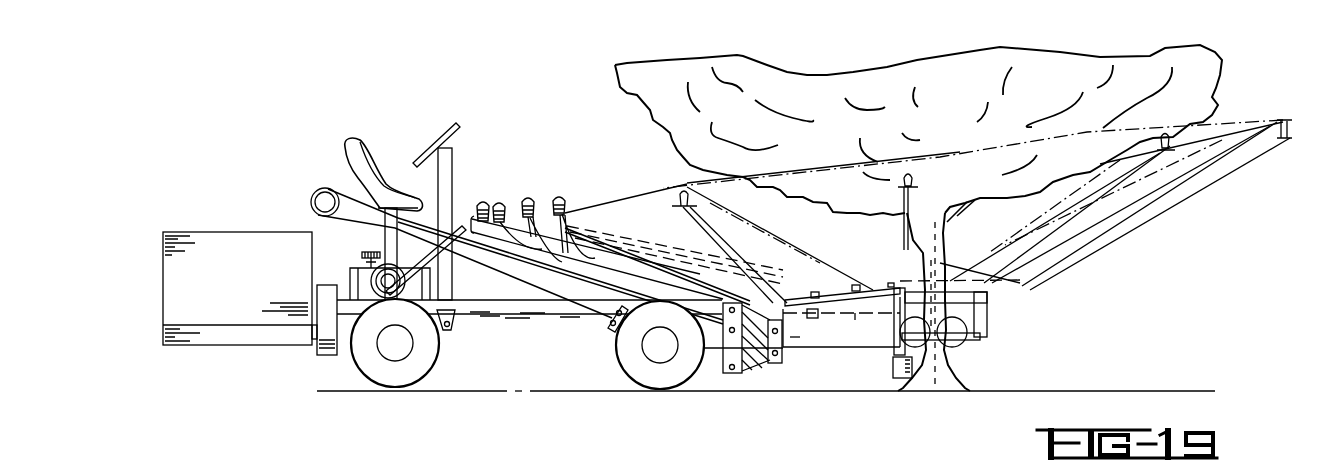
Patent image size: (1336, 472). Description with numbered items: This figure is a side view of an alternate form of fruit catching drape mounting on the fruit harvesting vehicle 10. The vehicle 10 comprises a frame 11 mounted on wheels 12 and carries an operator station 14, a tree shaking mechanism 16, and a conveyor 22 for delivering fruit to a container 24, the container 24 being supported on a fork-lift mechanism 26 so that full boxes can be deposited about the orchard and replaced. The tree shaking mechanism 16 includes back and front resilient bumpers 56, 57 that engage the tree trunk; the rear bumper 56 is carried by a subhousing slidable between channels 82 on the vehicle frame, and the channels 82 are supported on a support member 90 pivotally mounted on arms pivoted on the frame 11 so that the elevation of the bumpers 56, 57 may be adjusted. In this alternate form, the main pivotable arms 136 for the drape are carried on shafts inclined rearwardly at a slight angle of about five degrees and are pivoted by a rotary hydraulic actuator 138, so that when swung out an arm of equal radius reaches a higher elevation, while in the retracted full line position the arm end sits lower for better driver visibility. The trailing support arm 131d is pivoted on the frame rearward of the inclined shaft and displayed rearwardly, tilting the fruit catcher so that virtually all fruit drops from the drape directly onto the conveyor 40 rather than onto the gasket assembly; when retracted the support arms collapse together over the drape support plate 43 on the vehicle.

The fruit harvesting vehicle 10 is at (465, 413).
The frame 11 is at (490, 314).
The wheels 12 is at (392, 373).
The operator station 14 is at (464, 104).
The tree shaking mechanism 16 is at (1053, 341).
The conveyor 22 is at (299, 181).
The container 24 is at (215, 232).
The fork-lift mechanism 26 is at (242, 371).
The conveyor 40 is at (855, 320).
The drape support plate 43 is at (605, 284).
The rear resilient bumper 56 is at (917, 352).
The forward resilient bumper 57 is at (962, 347).
The channels 82 is at (797, 347).
The support member 90 is at (777, 363).
The trailing support arm 131d is at (814, 320).
The main pivotable arms 136 is at (826, 300).
The rotary hydraulic actuator 138 is at (900, 378).